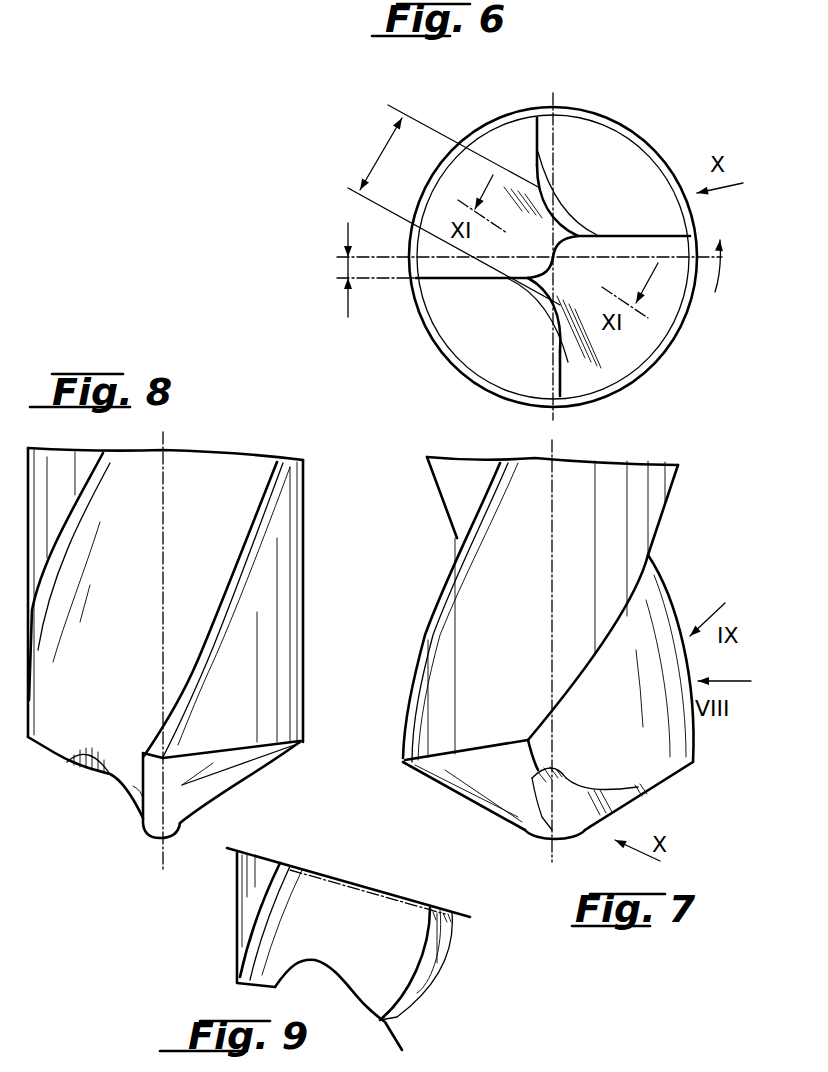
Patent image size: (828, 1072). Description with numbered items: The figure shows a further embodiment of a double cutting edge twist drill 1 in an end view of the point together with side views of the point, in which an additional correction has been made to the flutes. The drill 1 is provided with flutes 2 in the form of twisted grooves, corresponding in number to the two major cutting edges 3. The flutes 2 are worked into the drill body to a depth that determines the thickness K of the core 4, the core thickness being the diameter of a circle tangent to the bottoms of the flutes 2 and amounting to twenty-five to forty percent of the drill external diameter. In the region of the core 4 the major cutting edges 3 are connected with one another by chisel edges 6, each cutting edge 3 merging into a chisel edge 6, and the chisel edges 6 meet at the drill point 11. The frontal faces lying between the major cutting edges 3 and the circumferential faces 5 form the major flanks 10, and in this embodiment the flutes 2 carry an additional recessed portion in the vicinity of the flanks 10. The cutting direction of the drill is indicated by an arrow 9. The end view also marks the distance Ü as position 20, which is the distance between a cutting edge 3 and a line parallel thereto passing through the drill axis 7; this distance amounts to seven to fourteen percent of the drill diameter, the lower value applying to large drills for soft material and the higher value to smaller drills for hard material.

In FIG. 6, the twist drill 1 is at (612, 117).
In FIG. 8, the twist drill 1 is at (43, 753).
In FIG. 7, the twist drill 1 is at (427, 608).
In FIG. 9, the twist drill 1 is at (452, 948).
In FIG. 6, the flutes 2 is at (617, 157).
In FIG. 8, the flutes 2 is at (210, 483).
In FIG. 7, the flutes 2 is at (640, 608).
In FIG. 9, the flutes 2 is at (373, 917).
In FIG. 6, the major cutting edges 3 is at (638, 235).
In FIG. 8, the major cutting edges 3 is at (140, 788).
In FIG. 7, the major cutting edges 3 is at (652, 790).
In FIG. 9, the major cutting edges 3 is at (347, 1013).
In FIG. 6, the core 4 is at (381, 153).
In FIG. 6, the circumferential faces 5 is at (482, 137).
In FIG. 8, the circumferential faces 5 is at (257, 604).
In FIG. 7, the circumferential faces 5 is at (445, 666).
In FIG. 9, the circumferential faces 5 is at (418, 993).
In FIG. 6, the chisel edges 6 is at (553, 279).
In FIG. 8, the chisel edges 6 is at (150, 838).
In FIG. 7, the chisel edges 6 is at (539, 848).
In FIG. 6, the drill axis 7 is at (585, 232).
In FIG. 8, the drill axis 7 is at (163, 558).
In FIG. 7, the drill axis 7 is at (548, 636).
In FIG. 6, the arrow indicating cutting direction 9 is at (717, 287).
In FIG. 6, the major flanks 10 is at (527, 138).
In FIG. 8, the major flanks 10 is at (224, 774).
In FIG. 7, the major flanks 10 is at (480, 771).
In FIG. 6, the drill point 11 is at (583, 208).
In FIG. 6, the position Ü in front of axis 20 is at (348, 268).